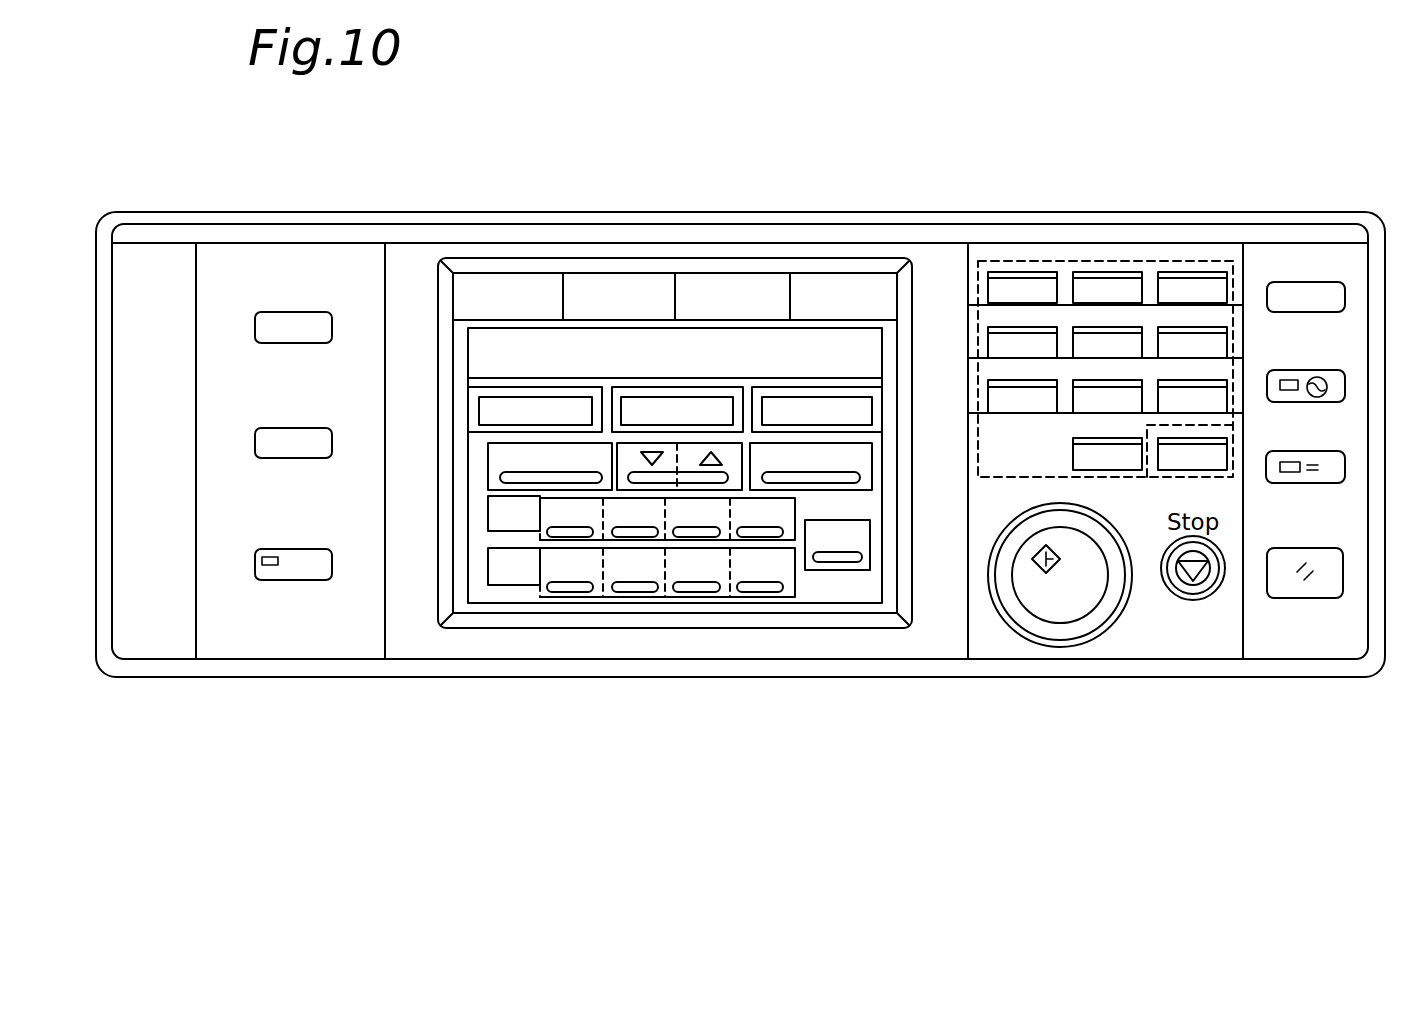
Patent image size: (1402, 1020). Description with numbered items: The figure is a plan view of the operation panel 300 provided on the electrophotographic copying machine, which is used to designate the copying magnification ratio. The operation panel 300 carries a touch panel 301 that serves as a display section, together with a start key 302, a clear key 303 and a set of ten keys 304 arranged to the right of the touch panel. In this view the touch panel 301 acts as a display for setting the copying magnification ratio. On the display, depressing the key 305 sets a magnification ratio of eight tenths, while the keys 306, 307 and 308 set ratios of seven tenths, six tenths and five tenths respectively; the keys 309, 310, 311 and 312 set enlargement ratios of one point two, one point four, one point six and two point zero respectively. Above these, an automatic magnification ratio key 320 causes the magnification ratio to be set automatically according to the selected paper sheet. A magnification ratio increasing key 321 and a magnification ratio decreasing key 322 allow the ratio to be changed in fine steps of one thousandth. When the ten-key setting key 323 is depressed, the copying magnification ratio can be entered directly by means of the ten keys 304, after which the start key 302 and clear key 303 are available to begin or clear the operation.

The operation panel 300 is at (587, 212).
The touch panel 301 is at (798, 259).
The start key 302 is at (1058, 612).
The clear key 303 is at (1192, 458).
The ten keys 304 is at (1157, 259).
The key 305 is at (555, 535).
The key 306 is at (617, 535).
The key 307 is at (679, 535).
The key 308 is at (745, 535).
The key 309 is at (578, 590).
The key 310 is at (641, 590).
The key 311 is at (703, 590).
The key 312 is at (766, 590).
The automatic magnification ratio key 320 is at (487, 412).
The magnification ratio increasing key 321 is at (694, 452).
The magnification ratio decreasing key 322 is at (650, 450).
The ten-key setting key 323 is at (833, 413).